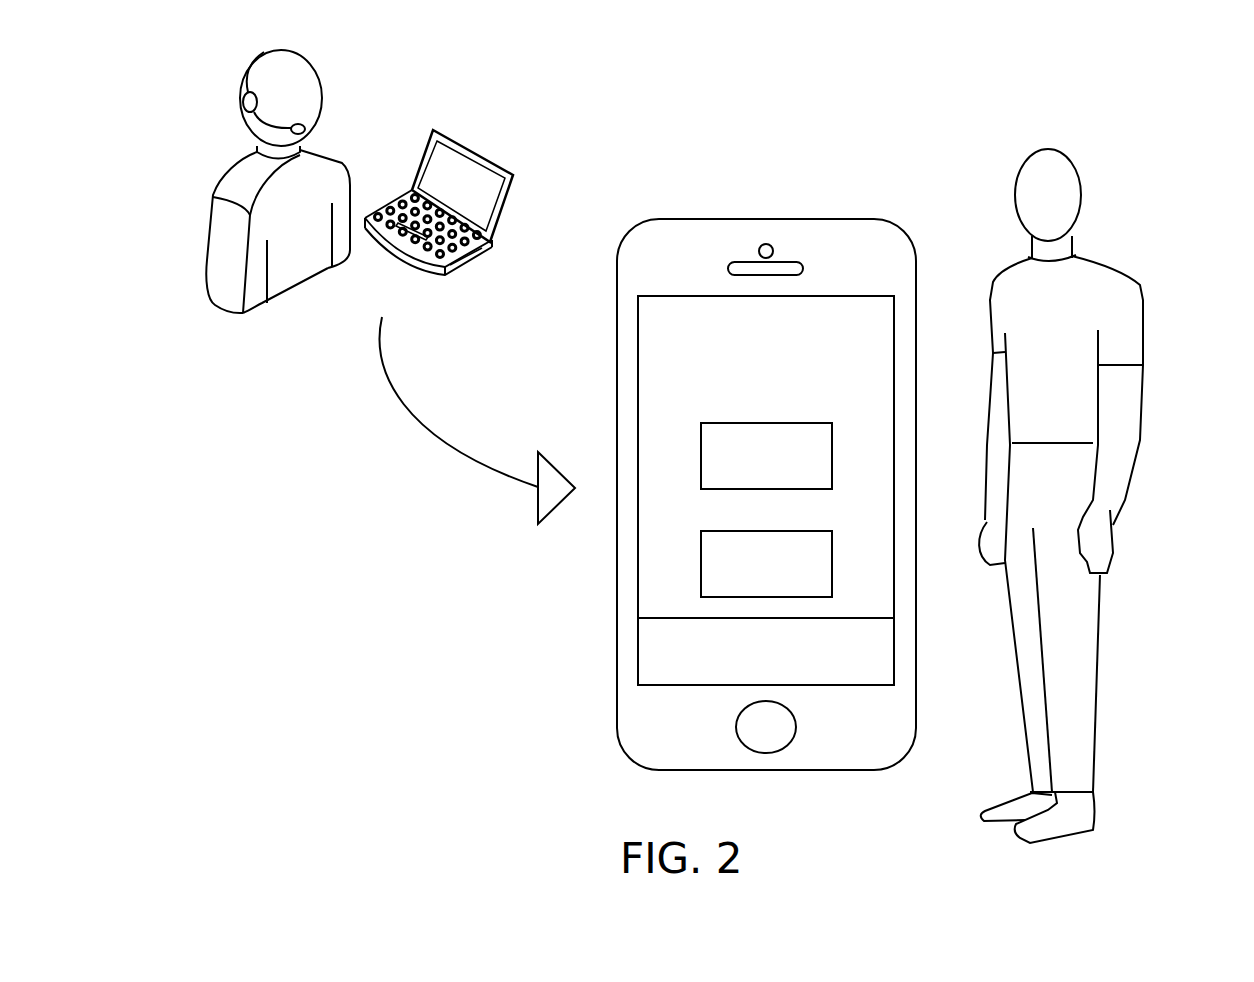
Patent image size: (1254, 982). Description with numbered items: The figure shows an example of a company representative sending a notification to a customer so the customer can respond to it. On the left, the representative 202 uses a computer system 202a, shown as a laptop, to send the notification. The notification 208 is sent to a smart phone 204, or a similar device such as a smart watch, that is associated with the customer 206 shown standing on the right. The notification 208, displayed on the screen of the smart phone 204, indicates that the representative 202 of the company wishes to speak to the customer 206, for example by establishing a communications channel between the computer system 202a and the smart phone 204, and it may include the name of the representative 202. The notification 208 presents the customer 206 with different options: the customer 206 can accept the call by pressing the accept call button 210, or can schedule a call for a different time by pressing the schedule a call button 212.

The representative 202 is at (352, 99).
The computer system 202a is at (540, 117).
The smart phone 204 is at (774, 194).
The customer 206 is at (1128, 228).
The notification 208 is at (638, 338).
The accept call button 210 is at (701, 465).
The schedule a call button 212 is at (701, 555).